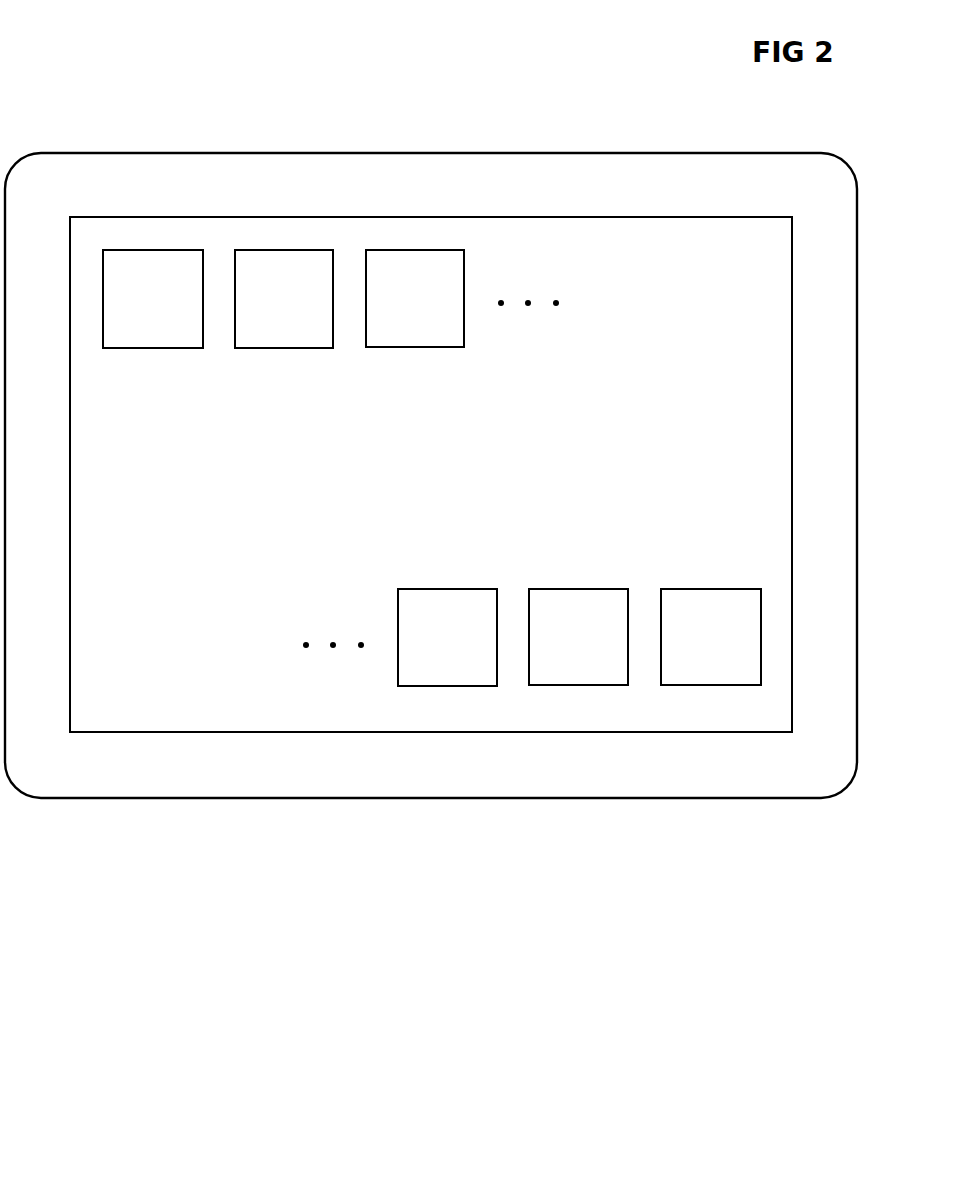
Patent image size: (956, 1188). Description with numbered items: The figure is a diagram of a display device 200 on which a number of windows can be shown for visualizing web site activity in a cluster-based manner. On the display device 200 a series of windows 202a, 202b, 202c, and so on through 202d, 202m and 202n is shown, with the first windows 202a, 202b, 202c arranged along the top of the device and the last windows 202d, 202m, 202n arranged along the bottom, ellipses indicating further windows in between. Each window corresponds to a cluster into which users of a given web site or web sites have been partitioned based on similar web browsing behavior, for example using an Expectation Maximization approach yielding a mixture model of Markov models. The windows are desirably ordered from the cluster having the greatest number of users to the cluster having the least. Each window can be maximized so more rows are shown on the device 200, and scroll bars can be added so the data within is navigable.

The display device 200 is at (196, 935).
The window 202a is at (153, 299).
The window 202b is at (284, 299).
The window 202c is at (415, 298).
The window 202d is at (447, 637).
The window 202m is at (578, 637).
The window 202n is at (711, 637).